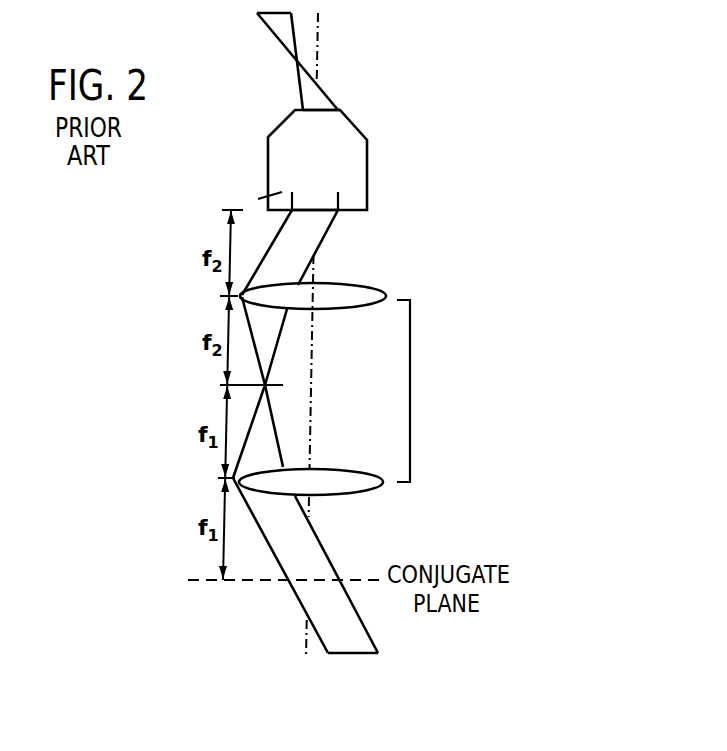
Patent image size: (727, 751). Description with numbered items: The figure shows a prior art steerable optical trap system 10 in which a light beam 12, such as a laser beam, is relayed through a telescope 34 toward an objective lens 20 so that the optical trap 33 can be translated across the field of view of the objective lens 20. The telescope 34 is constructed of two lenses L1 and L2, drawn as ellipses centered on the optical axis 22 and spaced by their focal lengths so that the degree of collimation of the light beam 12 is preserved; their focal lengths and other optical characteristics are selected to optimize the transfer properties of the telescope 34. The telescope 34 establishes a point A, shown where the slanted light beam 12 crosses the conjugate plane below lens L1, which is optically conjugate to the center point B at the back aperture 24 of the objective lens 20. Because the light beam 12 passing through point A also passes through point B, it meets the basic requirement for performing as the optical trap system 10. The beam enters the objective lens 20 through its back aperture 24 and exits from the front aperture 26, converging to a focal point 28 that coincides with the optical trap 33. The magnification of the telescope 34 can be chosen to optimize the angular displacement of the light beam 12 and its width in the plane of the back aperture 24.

The optical trap system 10 is at (515, 313).
The light beam 12 is at (305, 555).
The objective lens 20 is at (353, 152).
The optical axis 22 is at (303, 647).
The back aperture 24 is at (347, 210).
The front aperture 26 is at (340, 110).
The focal point 28 is at (297, 65).
The optical trap 33 is at (314, 62).
The telescope 34 is at (355, 394).
The first telescope lens L1 is at (324, 493).
The second telescope lens L2 is at (328, 289).
The point A is at (367, 628).
The point B is at (327, 215).